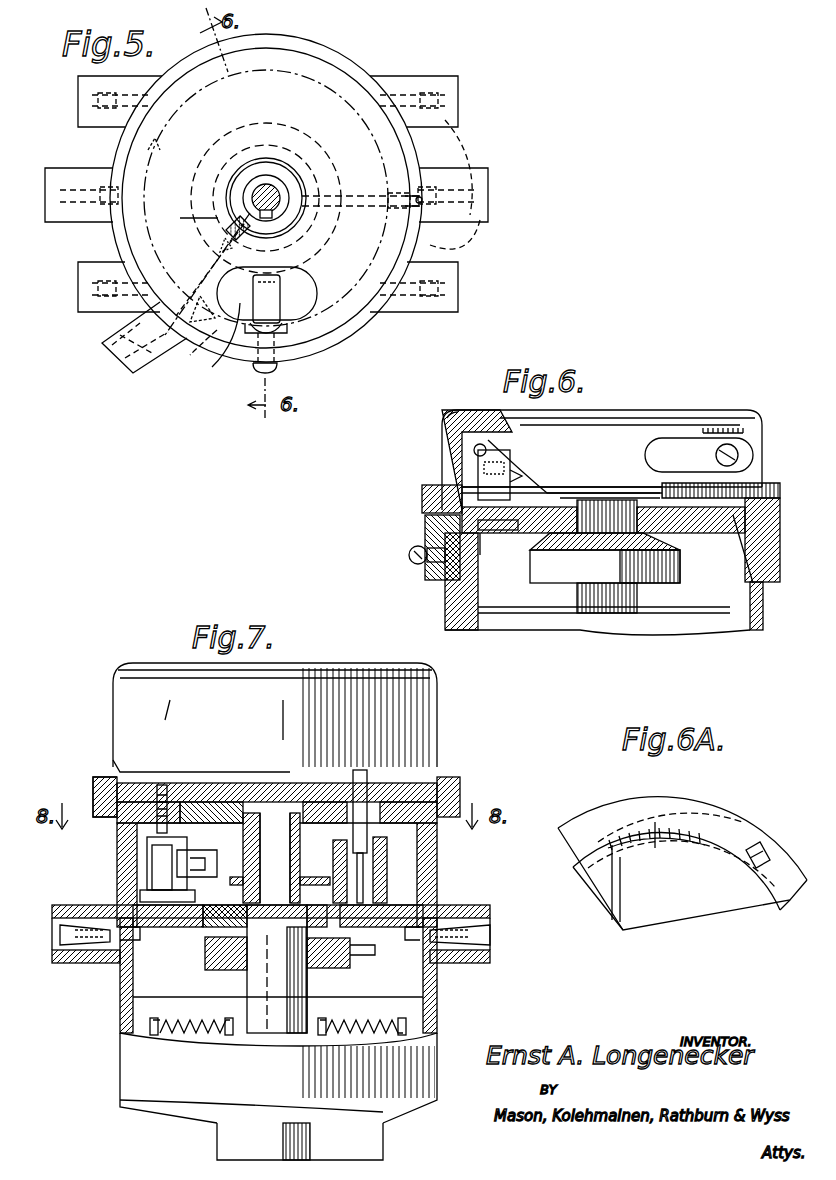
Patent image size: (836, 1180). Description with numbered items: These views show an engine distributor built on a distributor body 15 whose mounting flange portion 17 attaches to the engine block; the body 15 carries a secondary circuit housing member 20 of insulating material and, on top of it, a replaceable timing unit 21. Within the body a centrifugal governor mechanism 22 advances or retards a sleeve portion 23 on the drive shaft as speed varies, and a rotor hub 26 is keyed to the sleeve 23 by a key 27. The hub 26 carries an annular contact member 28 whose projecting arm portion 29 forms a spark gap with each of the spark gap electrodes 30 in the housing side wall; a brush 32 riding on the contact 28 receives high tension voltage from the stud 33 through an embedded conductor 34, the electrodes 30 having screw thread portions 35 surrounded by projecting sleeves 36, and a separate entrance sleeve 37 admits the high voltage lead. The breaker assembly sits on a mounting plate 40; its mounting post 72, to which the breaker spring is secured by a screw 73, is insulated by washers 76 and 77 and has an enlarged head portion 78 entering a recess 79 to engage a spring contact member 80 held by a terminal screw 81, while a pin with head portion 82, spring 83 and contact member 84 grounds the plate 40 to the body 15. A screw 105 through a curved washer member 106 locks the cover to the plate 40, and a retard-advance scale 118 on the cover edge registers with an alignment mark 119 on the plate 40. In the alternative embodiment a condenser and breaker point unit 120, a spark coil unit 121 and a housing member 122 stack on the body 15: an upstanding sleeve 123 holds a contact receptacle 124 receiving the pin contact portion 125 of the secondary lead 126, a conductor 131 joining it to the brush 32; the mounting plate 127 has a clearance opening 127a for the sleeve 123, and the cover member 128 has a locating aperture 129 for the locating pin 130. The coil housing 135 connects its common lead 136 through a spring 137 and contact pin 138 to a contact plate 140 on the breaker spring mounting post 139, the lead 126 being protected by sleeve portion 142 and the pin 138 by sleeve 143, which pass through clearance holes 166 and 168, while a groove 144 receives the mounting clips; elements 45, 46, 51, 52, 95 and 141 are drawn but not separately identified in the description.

In FIG. 6, the distributor body 15 is at (763, 630).
In FIG. 7, the distributor body 15 is at (110, 1079).
In FIG. 7, the mounting flange portion 17 is at (370, 1141).
In FIG. 5, the secondary circuit housing member 20 is at (343, 52).
In FIG. 6, the secondary circuit housing member 20 is at (763, 588).
In FIG. 6, the replaceable timing unit 21 is at (633, 402).
In FIG. 6A, the replaceable timing unit 21 is at (705, 932).
In FIG. 7, the centrifugal governor mechanism 22 is at (385, 1032).
In FIG. 6, the sleeve portion 23 is at (620, 597).
In FIG. 7, the sleeve portion 23 is at (300, 990).
In FIG. 5, the rotor hub 26 is at (272, 130).
In FIG. 6, the rotor hub 26 is at (589, 581).
In FIG. 7, the rotor hub 26 is at (278, 990).
In FIG. 7, the key 27 is at (277, 923).
In FIG. 6, the annular contact member 28 is at (573, 545).
In FIG. 7, the annular contact member 28 is at (213, 955).
In FIG. 5, the projecting arm portion 29 is at (362, 176).
In FIG. 7, the projecting arm portion 29 is at (348, 961).
In FIG. 5, the spark gap electrodes 30 is at (290, 200).
In FIG. 5, the brush 32 is at (190, 216).
In FIG. 7, the brush 32 is at (276, 936).
In FIG. 5, the stud 33 is at (131, 344).
In FIG. 5, the conductor 34 is at (222, 234).
In FIG. 5, the screw thread portions 35 is at (440, 250).
In FIG. 7, the screw thread portions 35 is at (100, 950).
In FIG. 5, the projecting sleeves 36 is at (455, 94).
In FIG. 7, the projecting sleeves 36 is at (72, 906).
In FIG. 5, the entrance sleeve 37 is at (150, 367).
In FIG. 6, the mounting plate 40 is at (660, 498).
In FIG. 6A, the mounting plate 40 is at (622, 925).
In FIG. 5, the bushing 45 is at (272, 192).
In FIG. 5, the shaft end 46 is at (270, 216).
In FIG. 5, the pin 51 is at (425, 196).
In FIG. 6, the plate 52 is at (425, 492).
In FIG. 6, the mounting post 72 is at (480, 488).
In FIG. 6, the screw 73 is at (510, 476).
In FIG. 6, the insulating washer 76 is at (425, 497).
In FIG. 6, the insulating washer 77 is at (430, 520).
In FIG. 6, the enlarged head portion 78 is at (496, 545).
In FIG. 5, the recess 79 is at (215, 343).
In FIG. 6, the recess 79 is at (494, 583).
In FIG. 5, the spring contact member 80 is at (278, 285).
In FIG. 6, the spring contact member 80 is at (616, 549).
In FIG. 5, the terminal screw 81 is at (280, 369).
In FIG. 6, the terminal screw 81 is at (551, 571).
In FIG. 6, the head portion 82 is at (698, 596).
In FIG. 6, the spring 83 is at (770, 570).
In FIG. 6, the contact member 84 is at (748, 588).
In FIG. 6, the cover edge 95 is at (447, 430).
In FIG. 6, the screw 105 is at (729, 443).
In FIG. 6A, the screw 105 is at (764, 845).
In FIG. 6, the curved washer member 106 is at (665, 446).
In FIG. 6A, the retard-advance scale 118 is at (648, 828).
In FIG. 6A, the alignment mark 119 is at (656, 848).
In FIG. 7, the condenser and breaker point unit 120 is at (448, 847).
In FIG. 7, the spark coil unit 121 is at (437, 712).
In FIG. 7, the secondary circuit housing member 122 is at (445, 975).
In FIG. 7, the upstanding sleeve 123 is at (326, 867).
In FIG. 7, the contact receptacle 124 is at (385, 870).
In FIG. 7, the pin contact portion 125 is at (262, 840).
In FIG. 7, the insulated secondary lead 126 is at (393, 780).
In FIG. 7, the mounting plate 127 is at (185, 945).
In FIG. 7, the clearance opening 127a is at (425, 893).
In FIG. 7, the cover member 128 is at (437, 830).
In FIG. 7, the locating aperture 129 is at (427, 903).
In FIG. 7, the locating pin 130 is at (493, 925).
In FIG. 7, the conductor 131 is at (280, 916).
In FIG. 7, the housing 135 is at (113, 762).
In FIG. 7, the common primary and secondary lead 136 is at (183, 785).
In FIG. 7, the spring 137 is at (158, 785).
In FIG. 7, the contact pin 138 is at (206, 841).
In FIG. 7, the breaker spring mounting post 139 is at (160, 867).
In FIG. 7, the contact plate 140 is at (150, 845).
In FIG. 7, the actuator 141 is at (238, 862).
In FIG. 7, the sleeve portion 142 is at (370, 762).
In FIG. 7, the sleeve 143 is at (117, 810).
In FIG. 7, the groove 144 is at (97, 778).
In FIG. 7, the clearance hole 166 is at (355, 790).
In FIG. 7, the clearance hole 168 is at (213, 780).